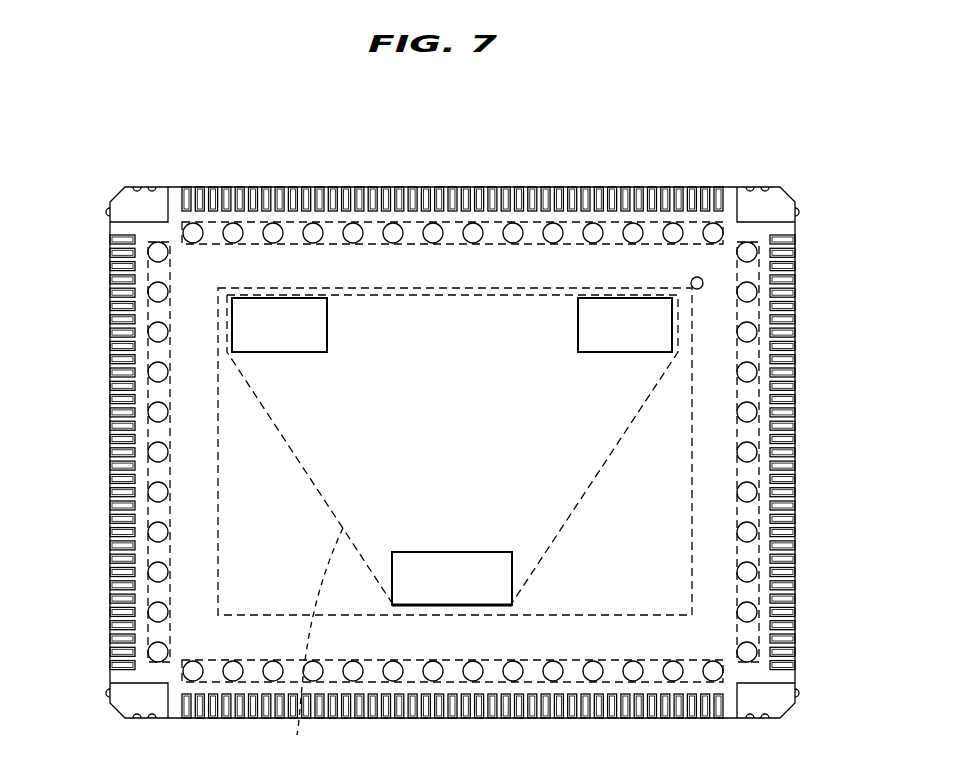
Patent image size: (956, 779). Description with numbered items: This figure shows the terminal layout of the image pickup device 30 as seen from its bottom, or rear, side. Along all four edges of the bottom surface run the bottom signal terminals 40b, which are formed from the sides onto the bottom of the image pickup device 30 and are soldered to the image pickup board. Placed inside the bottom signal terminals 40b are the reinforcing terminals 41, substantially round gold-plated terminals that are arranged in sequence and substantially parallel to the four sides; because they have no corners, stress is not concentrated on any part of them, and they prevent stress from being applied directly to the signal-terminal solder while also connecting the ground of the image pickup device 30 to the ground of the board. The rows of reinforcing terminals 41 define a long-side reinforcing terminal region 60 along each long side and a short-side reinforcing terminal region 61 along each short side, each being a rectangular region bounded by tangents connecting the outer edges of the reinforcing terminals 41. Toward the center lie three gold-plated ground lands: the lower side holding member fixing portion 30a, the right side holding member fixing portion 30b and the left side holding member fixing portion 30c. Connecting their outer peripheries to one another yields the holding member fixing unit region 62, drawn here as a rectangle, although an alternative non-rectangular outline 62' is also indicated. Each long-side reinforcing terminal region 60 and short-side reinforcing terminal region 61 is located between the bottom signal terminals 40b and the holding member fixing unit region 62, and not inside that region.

The image pickup device 30 is at (148, 187).
The lower side holding member fixing portion 30a is at (463, 595).
The right side holding member fixing portion 30b is at (635, 310).
The left side holding member fixing portion 30c is at (300, 310).
The bottom signal terminals 40b is at (550, 188).
The reinforcing terminals 41 is at (475, 225).
The long-side reinforcing terminal region 60 is at (255, 222).
The short-side reinforcing terminal region 61 is at (760, 314).
The holding member fixing unit region 62 is at (460, 519).
The alternative shape of holding member fixing unit region 62' is at (310, 645).